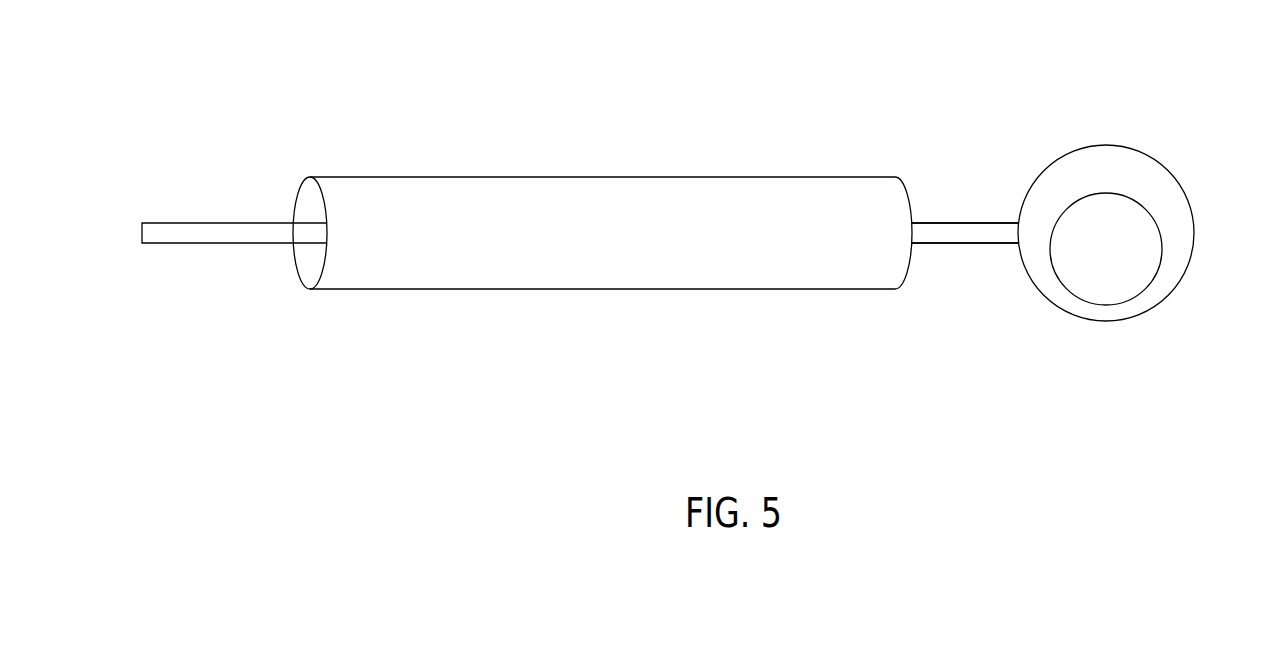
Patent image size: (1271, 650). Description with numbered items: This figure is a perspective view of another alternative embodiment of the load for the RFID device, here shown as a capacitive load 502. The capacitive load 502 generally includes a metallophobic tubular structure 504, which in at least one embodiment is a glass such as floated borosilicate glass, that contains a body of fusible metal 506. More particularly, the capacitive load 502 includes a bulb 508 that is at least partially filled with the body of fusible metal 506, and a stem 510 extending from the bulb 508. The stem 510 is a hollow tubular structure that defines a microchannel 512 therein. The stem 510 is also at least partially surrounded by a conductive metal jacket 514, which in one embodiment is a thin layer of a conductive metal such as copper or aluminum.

The capacitive load 502 is at (840, 80).
The metallophobic tubular structure 504 is at (248, 243).
The body of fusible metal 506 is at (1150, 210).
The bulb 508 is at (1118, 146).
The stem 510 is at (996, 243).
The microchannel 512 is at (930, 228).
The conductive metal jacket 514 is at (647, 289).